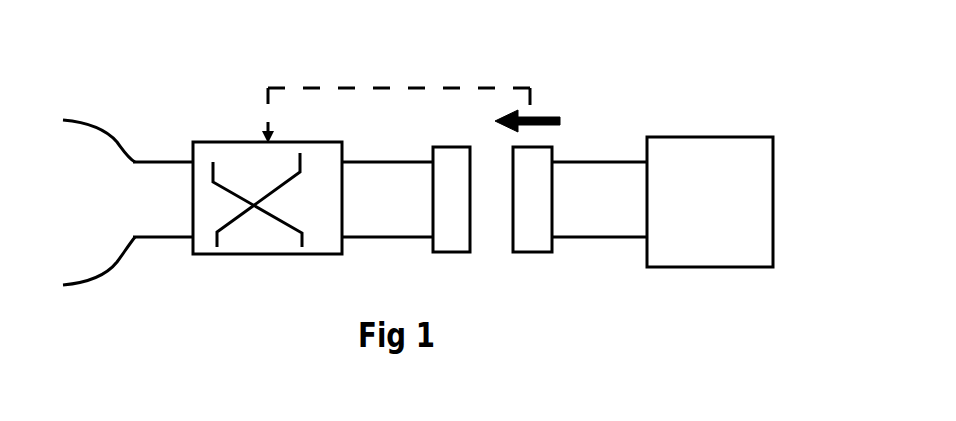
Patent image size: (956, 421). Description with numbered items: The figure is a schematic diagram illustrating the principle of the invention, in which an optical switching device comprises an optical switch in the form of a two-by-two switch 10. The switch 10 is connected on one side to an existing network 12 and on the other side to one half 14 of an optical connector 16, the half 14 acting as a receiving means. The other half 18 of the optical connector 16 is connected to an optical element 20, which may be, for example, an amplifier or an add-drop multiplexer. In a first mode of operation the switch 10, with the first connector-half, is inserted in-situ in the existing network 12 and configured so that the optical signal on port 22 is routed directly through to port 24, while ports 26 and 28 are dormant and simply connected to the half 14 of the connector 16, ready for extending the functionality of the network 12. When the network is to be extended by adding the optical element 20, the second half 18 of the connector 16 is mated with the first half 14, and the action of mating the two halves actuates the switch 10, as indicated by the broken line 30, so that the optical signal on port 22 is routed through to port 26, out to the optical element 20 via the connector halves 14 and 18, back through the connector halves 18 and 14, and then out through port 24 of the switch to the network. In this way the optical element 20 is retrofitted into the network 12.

The 2×2 switch 10 is at (250, 142).
The existing network 12 is at (96, 222).
The half of the optical connector 14 is at (457, 145).
The optical connector 16 is at (556, 107).
The other half of the optical connector 18 is at (542, 252).
The optical element 20 is at (710, 137).
The port 22 is at (192, 162).
The port 24 is at (192, 237).
The port 26 is at (343, 160).
The port 28 is at (342, 238).
The broken line 30 is at (368, 85).